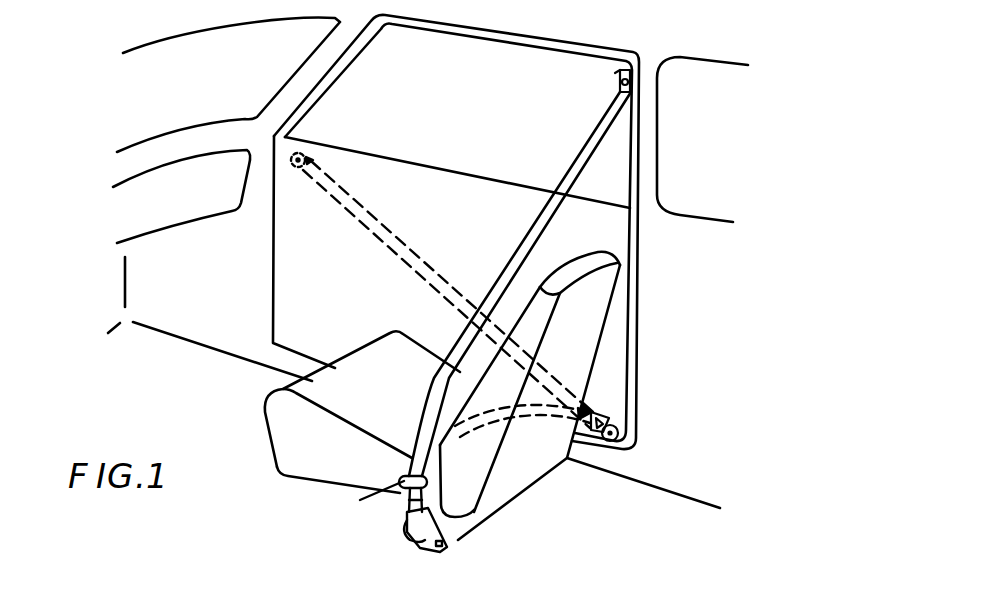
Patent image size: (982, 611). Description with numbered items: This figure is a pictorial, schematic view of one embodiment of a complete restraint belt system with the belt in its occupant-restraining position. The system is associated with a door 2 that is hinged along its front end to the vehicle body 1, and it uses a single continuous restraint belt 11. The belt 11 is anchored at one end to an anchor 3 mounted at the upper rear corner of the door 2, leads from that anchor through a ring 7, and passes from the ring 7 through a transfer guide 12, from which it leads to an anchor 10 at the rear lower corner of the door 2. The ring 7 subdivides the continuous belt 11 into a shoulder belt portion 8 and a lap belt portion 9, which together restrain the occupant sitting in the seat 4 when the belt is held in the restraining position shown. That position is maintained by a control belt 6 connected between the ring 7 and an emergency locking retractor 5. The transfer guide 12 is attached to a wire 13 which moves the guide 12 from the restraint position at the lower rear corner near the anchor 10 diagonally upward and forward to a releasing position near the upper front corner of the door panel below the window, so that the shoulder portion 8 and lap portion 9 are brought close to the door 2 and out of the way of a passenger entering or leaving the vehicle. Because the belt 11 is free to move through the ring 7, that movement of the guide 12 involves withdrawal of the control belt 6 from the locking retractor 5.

The vehicle body 1 is at (203, 347).
The door 2 is at (623, 316).
The anchor 3 is at (628, 65).
The seat 4 is at (288, 465).
The emergency locking retractor 5 is at (414, 548).
The control belt 6 is at (407, 507).
The ring 7 is at (360, 500).
The shoulder belt portion 8 is at (550, 222).
The lap belt portion 9 is at (432, 441).
The anchor 10 is at (618, 433).
The restraint belt 11 is at (458, 335).
The transfer guide 12 is at (594, 409).
The wire 13 is at (404, 240).